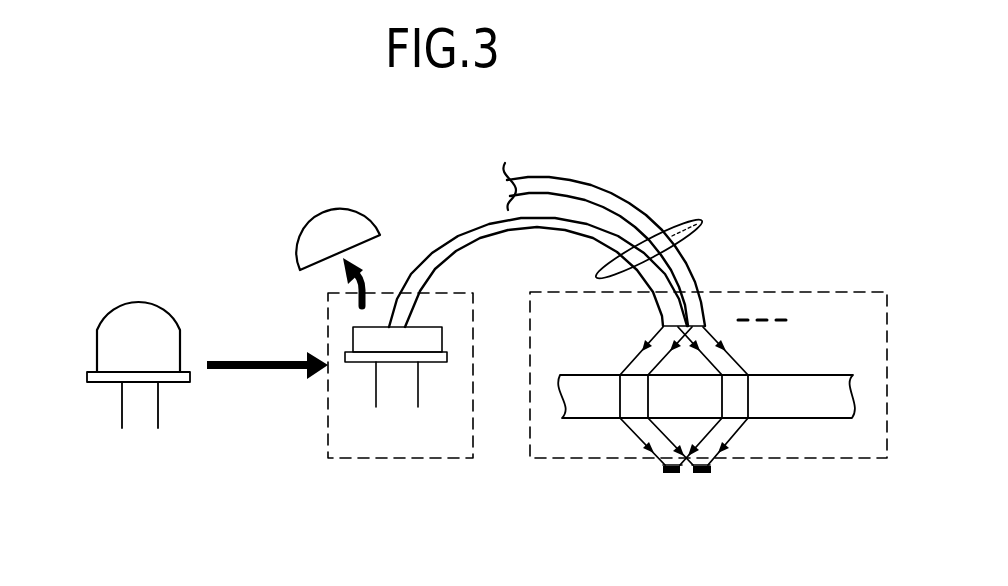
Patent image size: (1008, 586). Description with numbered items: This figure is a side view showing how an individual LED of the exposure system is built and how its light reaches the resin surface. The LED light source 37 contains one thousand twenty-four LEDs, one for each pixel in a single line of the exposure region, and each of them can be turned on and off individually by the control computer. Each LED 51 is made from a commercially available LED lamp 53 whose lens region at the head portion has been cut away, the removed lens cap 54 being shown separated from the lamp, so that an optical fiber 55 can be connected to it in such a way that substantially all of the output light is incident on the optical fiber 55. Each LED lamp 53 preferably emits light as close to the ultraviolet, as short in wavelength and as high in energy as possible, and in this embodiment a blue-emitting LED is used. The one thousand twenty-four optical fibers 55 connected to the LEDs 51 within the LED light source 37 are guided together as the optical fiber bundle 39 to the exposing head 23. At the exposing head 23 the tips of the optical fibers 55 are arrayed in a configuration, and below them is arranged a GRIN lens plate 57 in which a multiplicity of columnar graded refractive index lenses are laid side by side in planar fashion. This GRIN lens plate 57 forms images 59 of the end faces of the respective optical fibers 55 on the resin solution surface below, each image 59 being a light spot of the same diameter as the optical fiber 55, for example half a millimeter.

The exposing head 23 is at (790, 291).
The LED light source 37 is at (435, 462).
The optical fiber bundle 39 is at (703, 220).
The LED 51 is at (360, 380).
The LED lamp 53 is at (134, 300).
The lens cap 54 is at (328, 208).
The optical fiber 55 is at (530, 216).
The GRIN lens plate 57 is at (573, 392).
The image 59 is at (672, 473).